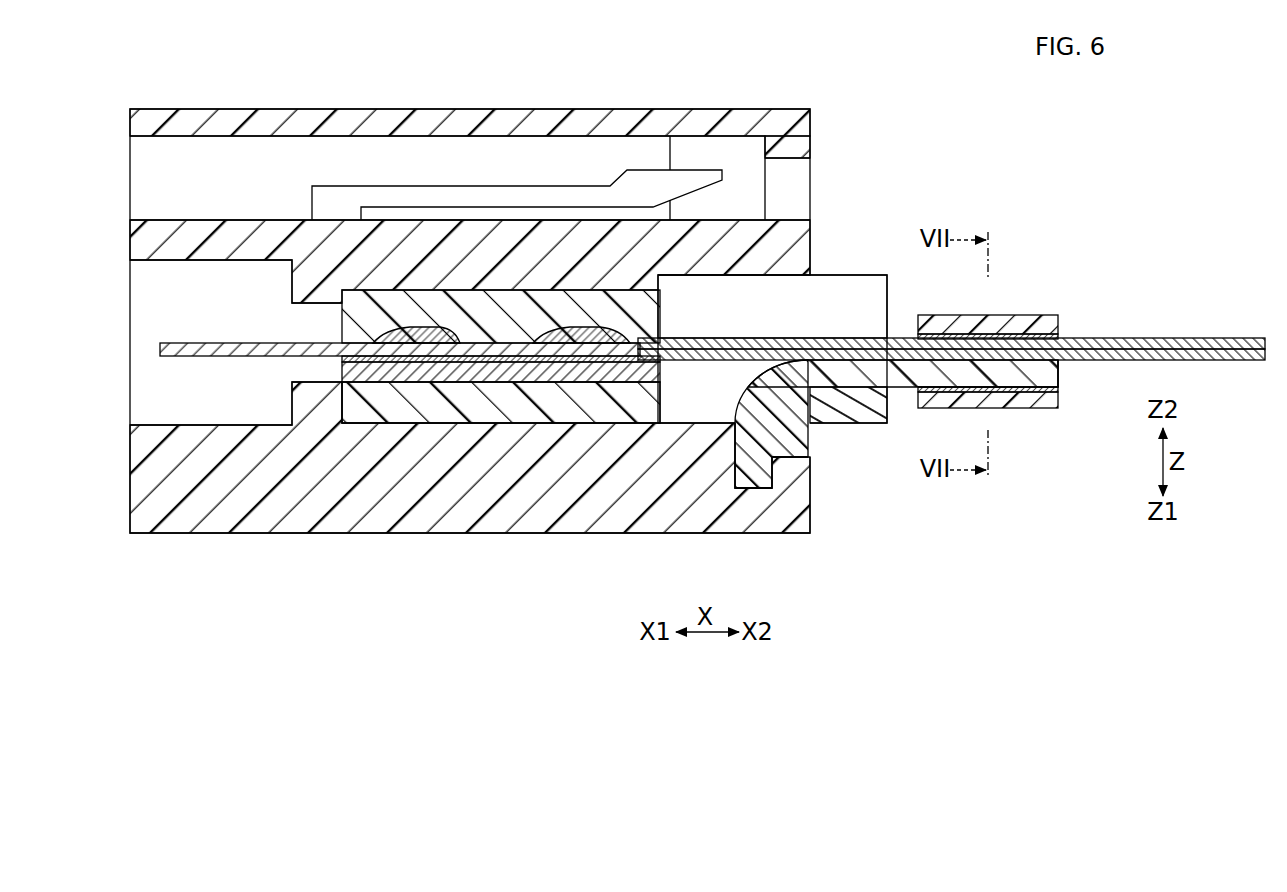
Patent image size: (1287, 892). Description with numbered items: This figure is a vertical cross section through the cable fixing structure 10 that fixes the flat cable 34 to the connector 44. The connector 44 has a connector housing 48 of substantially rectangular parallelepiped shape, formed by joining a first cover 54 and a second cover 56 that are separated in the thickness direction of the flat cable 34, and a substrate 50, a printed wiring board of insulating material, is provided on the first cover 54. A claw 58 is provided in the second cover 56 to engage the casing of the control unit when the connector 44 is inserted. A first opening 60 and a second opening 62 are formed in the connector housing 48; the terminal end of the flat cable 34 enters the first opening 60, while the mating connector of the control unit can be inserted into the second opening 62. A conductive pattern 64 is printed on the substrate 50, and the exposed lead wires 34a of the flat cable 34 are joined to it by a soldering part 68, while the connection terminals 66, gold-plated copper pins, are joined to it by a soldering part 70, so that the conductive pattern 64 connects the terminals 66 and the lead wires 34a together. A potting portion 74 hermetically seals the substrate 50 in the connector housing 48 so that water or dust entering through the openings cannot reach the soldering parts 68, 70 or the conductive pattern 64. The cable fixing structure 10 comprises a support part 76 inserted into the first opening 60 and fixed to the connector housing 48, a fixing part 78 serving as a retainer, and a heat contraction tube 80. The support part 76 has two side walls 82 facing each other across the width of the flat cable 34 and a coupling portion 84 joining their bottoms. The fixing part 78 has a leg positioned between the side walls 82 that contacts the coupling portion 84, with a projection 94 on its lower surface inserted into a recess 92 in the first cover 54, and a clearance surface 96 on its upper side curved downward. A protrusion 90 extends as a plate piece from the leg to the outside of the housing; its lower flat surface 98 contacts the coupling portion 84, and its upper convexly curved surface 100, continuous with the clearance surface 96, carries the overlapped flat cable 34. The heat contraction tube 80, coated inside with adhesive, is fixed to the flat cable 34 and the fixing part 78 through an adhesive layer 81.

The cable fixing structure 10 is at (1063, 376).
The flat cable 34 is at (1239, 335).
The lead wire 34a is at (594, 372).
The connector 44 is at (814, 99).
The connector housing 48 is at (745, 118).
The substrate 50 is at (447, 393).
The first cover 54 is at (292, 522).
The second cover 56 is at (233, 111).
The claw 58 is at (648, 176).
The first opening 60 is at (800, 285).
The second opening 62 is at (173, 263).
The conductive pattern 64 is at (503, 380).
The connection terminal 66 is at (190, 357).
The soldering part 68 is at (592, 326).
The soldering part 70 is at (395, 332).
The potting portion 74 is at (386, 412).
The support part 76 is at (886, 272).
The fixing part 78 is at (968, 375).
The heat contraction tube 80 is at (960, 317).
The adhesive layer 81 is at (1045, 404).
The side wall 82 is at (858, 290).
The coupling portion 84 is at (853, 405).
The protrusion 90 is at (1014, 393).
The recess 92 is at (752, 487).
The projection 94 is at (745, 480).
The clearance surface 96 is at (762, 400).
The flat surface 98 is at (903, 390).
The convexly curved surface 100 is at (1036, 337).